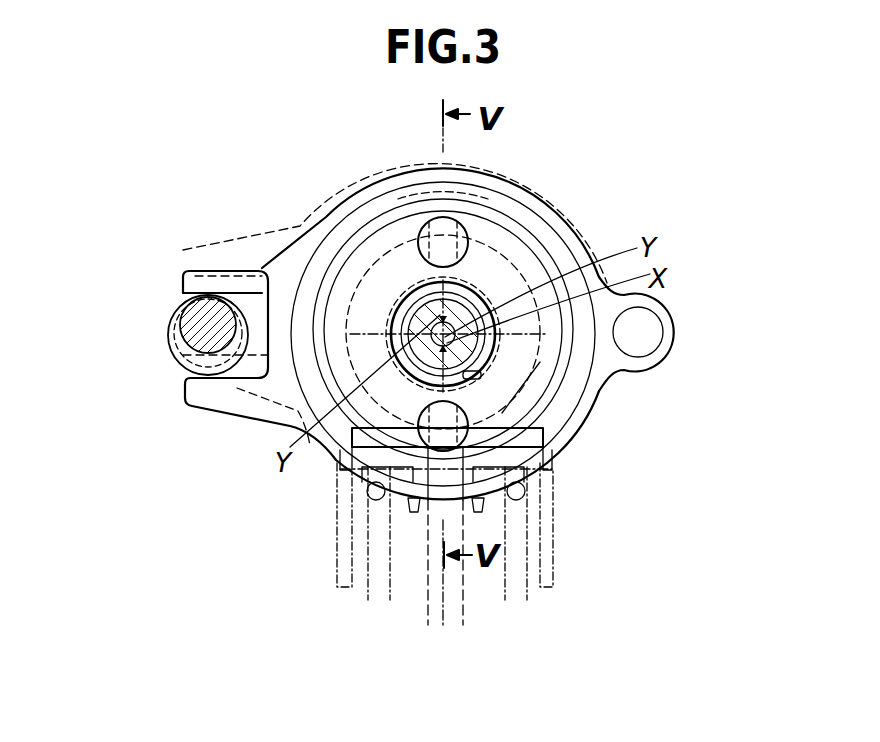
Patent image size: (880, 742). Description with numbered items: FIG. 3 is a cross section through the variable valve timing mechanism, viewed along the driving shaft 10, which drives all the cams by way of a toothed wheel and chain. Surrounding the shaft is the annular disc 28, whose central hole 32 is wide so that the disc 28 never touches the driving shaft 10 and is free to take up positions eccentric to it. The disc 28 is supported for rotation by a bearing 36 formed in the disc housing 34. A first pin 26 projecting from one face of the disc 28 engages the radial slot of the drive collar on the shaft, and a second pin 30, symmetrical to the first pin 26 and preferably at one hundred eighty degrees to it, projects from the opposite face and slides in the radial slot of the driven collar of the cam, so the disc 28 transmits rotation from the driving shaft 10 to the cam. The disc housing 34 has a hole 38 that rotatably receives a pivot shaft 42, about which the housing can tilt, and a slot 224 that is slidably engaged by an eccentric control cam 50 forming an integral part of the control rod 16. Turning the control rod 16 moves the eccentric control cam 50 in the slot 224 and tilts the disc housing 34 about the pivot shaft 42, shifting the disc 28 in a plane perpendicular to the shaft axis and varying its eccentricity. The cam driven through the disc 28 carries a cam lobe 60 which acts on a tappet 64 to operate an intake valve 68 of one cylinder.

The driving shaft 10 is at (470, 348).
The control rod 16 is at (193, 313).
The first pin 26 is at (352, 483).
The annular disc 28 is at (537, 400).
The second pin 30 is at (465, 228).
The central hole 32 is at (480, 378).
The disc housing 34 is at (568, 235).
The bearing 36 is at (298, 386).
The hole 38 is at (640, 331).
The pivot shaft 42 is at (648, 338).
The eccentric control cam 50 is at (206, 369).
The cam lobe 60 is at (482, 213).
The tappet 64 is at (548, 517).
The intake valve 68 is at (450, 593).
The slot 224 is at (237, 392).